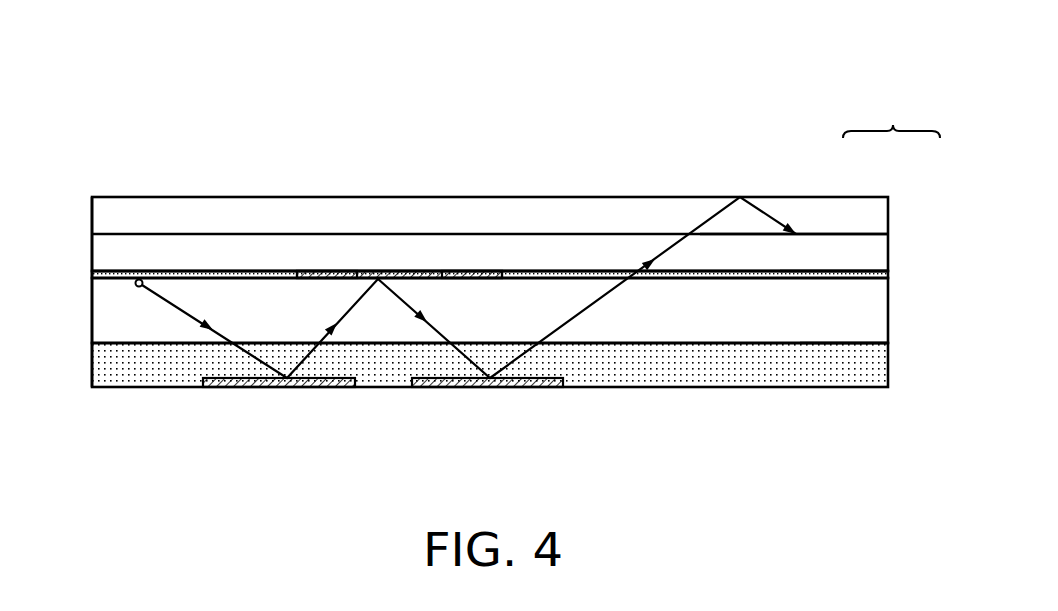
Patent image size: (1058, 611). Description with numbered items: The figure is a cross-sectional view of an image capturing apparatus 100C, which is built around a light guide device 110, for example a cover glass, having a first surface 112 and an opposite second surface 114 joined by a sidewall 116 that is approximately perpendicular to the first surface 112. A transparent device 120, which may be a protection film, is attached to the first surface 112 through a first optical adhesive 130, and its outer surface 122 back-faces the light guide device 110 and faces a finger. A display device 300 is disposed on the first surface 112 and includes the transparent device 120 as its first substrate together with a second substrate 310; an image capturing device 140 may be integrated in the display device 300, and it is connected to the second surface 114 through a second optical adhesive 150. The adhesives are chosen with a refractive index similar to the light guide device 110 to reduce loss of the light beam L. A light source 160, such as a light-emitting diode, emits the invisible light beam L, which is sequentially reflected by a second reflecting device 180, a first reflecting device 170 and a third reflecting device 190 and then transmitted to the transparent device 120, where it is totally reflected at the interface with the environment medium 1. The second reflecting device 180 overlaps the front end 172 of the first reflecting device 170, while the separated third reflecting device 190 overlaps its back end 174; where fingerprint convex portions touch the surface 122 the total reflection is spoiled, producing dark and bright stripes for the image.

The environment medium 1 is at (796, 65).
The display device 300 is at (520, 179).
The image capturing device 140 is at (891, 131).
The second substrate 310 is at (865, 216).
The transparent device 120 is at (878, 247).
The surface 122 is at (809, 222).
The first optical adhesive 130 is at (888, 274).
The first surface 112 is at (849, 268).
The light guide device 110 is at (872, 313).
The second optical adhesive 150 is at (885, 347).
The second surface 114 is at (855, 350).
The sidewall 116 is at (82, 307).
The light source 160 is at (140, 276).
The light beam L is at (188, 305).
The first reflecting device 170 is at (415, 270).
The front end 172 is at (320, 258).
The back end 174 is at (487, 258).
The second reflecting device 180 is at (270, 388).
The third reflecting device 190 is at (482, 388).
The image capturing apparatus 100C is at (945, 462).